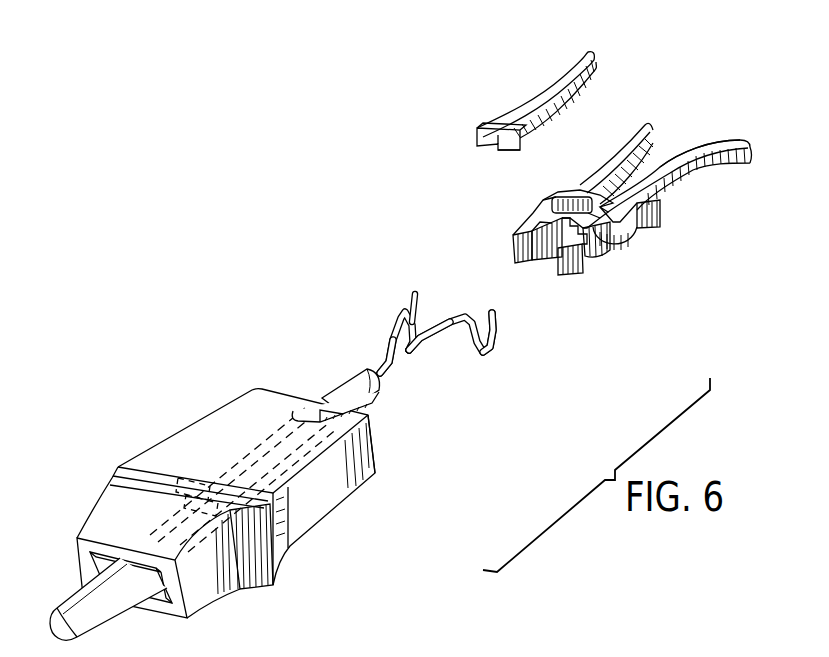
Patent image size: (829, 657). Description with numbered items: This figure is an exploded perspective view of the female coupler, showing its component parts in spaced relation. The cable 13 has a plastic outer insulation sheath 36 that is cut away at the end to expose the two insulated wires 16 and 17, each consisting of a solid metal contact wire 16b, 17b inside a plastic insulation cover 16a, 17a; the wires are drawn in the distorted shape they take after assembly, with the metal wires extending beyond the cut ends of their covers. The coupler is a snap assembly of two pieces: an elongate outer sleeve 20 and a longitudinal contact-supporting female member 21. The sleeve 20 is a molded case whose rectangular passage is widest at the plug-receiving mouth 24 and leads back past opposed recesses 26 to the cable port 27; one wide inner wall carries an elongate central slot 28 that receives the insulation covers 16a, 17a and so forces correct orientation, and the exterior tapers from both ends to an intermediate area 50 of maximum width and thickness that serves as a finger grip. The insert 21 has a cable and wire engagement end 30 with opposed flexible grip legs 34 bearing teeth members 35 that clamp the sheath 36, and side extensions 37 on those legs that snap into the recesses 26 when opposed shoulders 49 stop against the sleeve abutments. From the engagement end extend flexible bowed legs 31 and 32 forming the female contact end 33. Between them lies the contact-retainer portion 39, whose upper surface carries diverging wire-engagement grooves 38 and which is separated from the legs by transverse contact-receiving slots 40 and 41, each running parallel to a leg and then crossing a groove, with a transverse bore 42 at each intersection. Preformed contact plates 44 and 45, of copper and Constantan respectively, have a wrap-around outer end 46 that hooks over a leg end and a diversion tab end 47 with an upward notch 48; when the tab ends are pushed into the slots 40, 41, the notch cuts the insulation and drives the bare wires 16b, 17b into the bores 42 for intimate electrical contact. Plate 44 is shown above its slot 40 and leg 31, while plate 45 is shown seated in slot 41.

The cable 13 is at (378, 406).
The insulated wire 16 is at (381, 311).
The plastic insulation cover 16a is at (382, 351).
The solid metal contact wire 16b is at (412, 293).
The insulated wire 17 is at (446, 350).
The plastic insulation cover 17a is at (413, 353).
The solid metal contact wire 17b is at (494, 320).
The outer sleeve 20 is at (215, 437).
The contact-supporting female member 21 is at (724, 254).
The mouth 24 is at (378, 440).
The opposed recesses 26 is at (102, 560).
The cable port 27 is at (153, 592).
The elongate central groove or slot 28 is at (282, 420).
The cable and wire engagement end 30 is at (616, 202).
The flexible bowed leg 31 is at (633, 148).
The flexible bowed leg 32 is at (695, 187).
The female contact end 33 is at (681, 113).
The grip legs 34 is at (513, 220).
The teeth members 35 is at (551, 254).
The outer insulation sheath 36 is at (340, 382).
The side extensions 37 is at (514, 240).
The wire-engagement grooves 38 is at (550, 213).
The contact-retainer portion 39 is at (640, 194).
The contact-receiving slot 40 is at (560, 193).
The contact-receiving slot 41 is at (660, 218).
The transverse bore 42 is at (620, 200).
The contact plate 44 is at (546, 106).
The contact plate 45 is at (715, 140).
The wrap-around outer end 46 is at (570, 58).
The diversion tab end 47 is at (478, 140).
The upward notch 48 is at (492, 150).
The insert shoulders 49 is at (535, 214).
The intermediate area of maximum width and thickness 50 is at (270, 558).